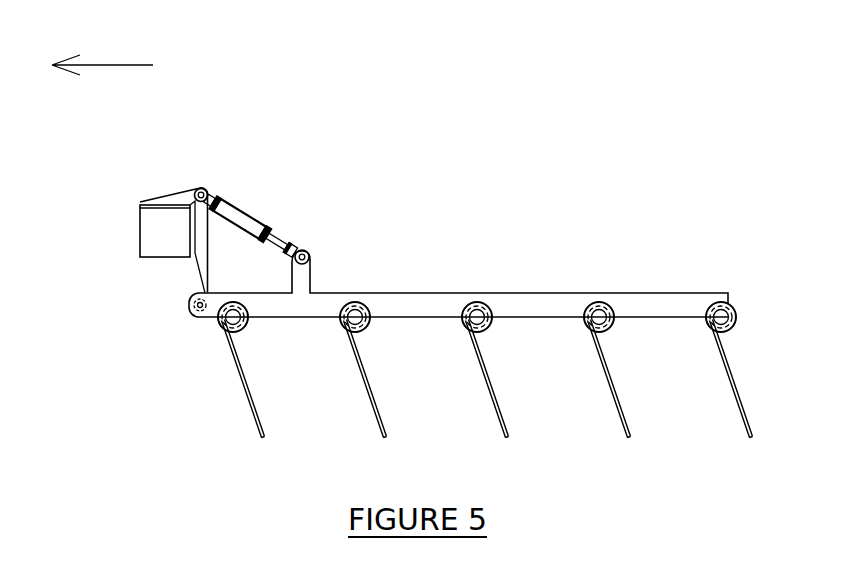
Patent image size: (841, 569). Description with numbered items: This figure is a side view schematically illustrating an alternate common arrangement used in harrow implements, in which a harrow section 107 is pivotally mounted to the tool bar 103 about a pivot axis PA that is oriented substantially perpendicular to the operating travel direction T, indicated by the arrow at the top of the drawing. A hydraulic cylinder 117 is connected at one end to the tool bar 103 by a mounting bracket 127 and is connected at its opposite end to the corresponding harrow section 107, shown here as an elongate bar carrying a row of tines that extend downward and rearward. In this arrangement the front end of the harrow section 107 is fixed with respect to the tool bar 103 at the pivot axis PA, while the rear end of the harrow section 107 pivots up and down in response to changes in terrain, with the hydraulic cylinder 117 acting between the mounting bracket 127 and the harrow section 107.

The operating travel direction T is at (112, 65).
The tool bar 103 is at (140, 232).
The harrow section 107 is at (488, 292).
The hydraulic cylinder 117 is at (248, 214).
The mounting bracket 127 is at (148, 198).
The pivot axis PA is at (190, 303).